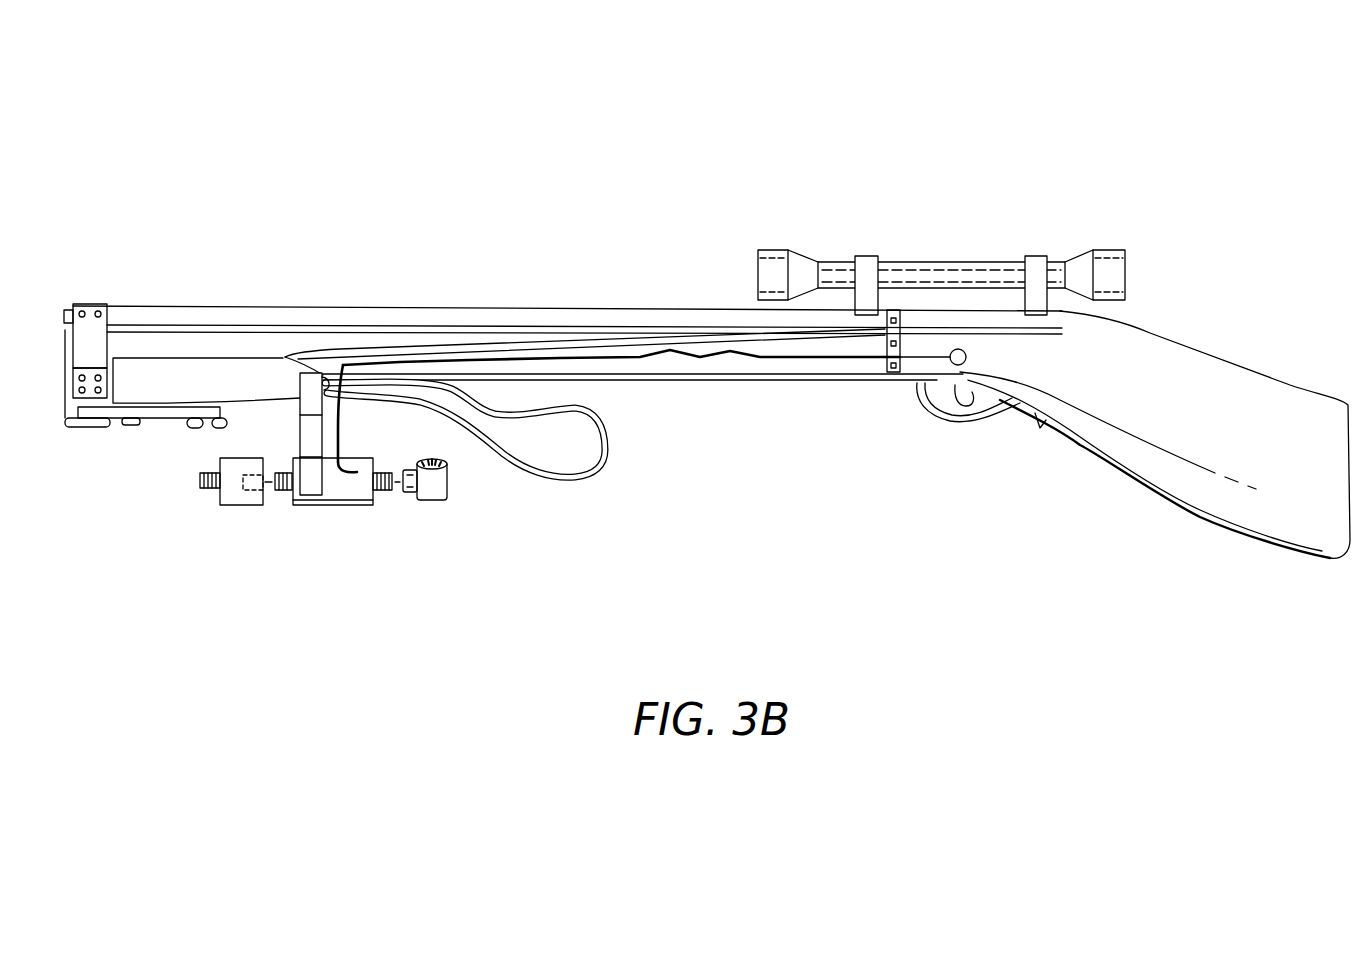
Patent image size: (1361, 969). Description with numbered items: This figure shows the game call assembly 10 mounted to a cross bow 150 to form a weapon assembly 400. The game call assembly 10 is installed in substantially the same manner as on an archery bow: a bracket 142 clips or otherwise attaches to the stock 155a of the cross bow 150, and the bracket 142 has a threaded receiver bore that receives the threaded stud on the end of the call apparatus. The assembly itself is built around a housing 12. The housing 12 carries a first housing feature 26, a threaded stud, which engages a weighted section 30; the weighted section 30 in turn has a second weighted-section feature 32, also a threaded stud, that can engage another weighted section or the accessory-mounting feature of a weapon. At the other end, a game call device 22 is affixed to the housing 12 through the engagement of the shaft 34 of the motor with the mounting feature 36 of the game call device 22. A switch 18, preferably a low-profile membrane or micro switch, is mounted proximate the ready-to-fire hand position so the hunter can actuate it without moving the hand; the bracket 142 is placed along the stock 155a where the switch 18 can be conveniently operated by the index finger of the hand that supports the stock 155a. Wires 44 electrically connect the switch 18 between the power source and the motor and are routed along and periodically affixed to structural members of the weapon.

The weapon assembly 400 is at (754, 172).
The cross bow 150 is at (385, 297).
The stock 155a is at (1207, 392).
The switch 18 is at (966, 357).
The bracket 142 is at (299, 437).
The wires 44 is at (341, 440).
The game call assembly 10 is at (336, 557).
The weighted section 30 is at (243, 507).
The second weighted-section feature 32 is at (213, 490).
The first housing feature 26 is at (283, 492).
The housing 12 is at (343, 506).
The shaft 34 is at (382, 492).
The mounting feature 36 is at (411, 494).
The game call device 22 is at (450, 501).